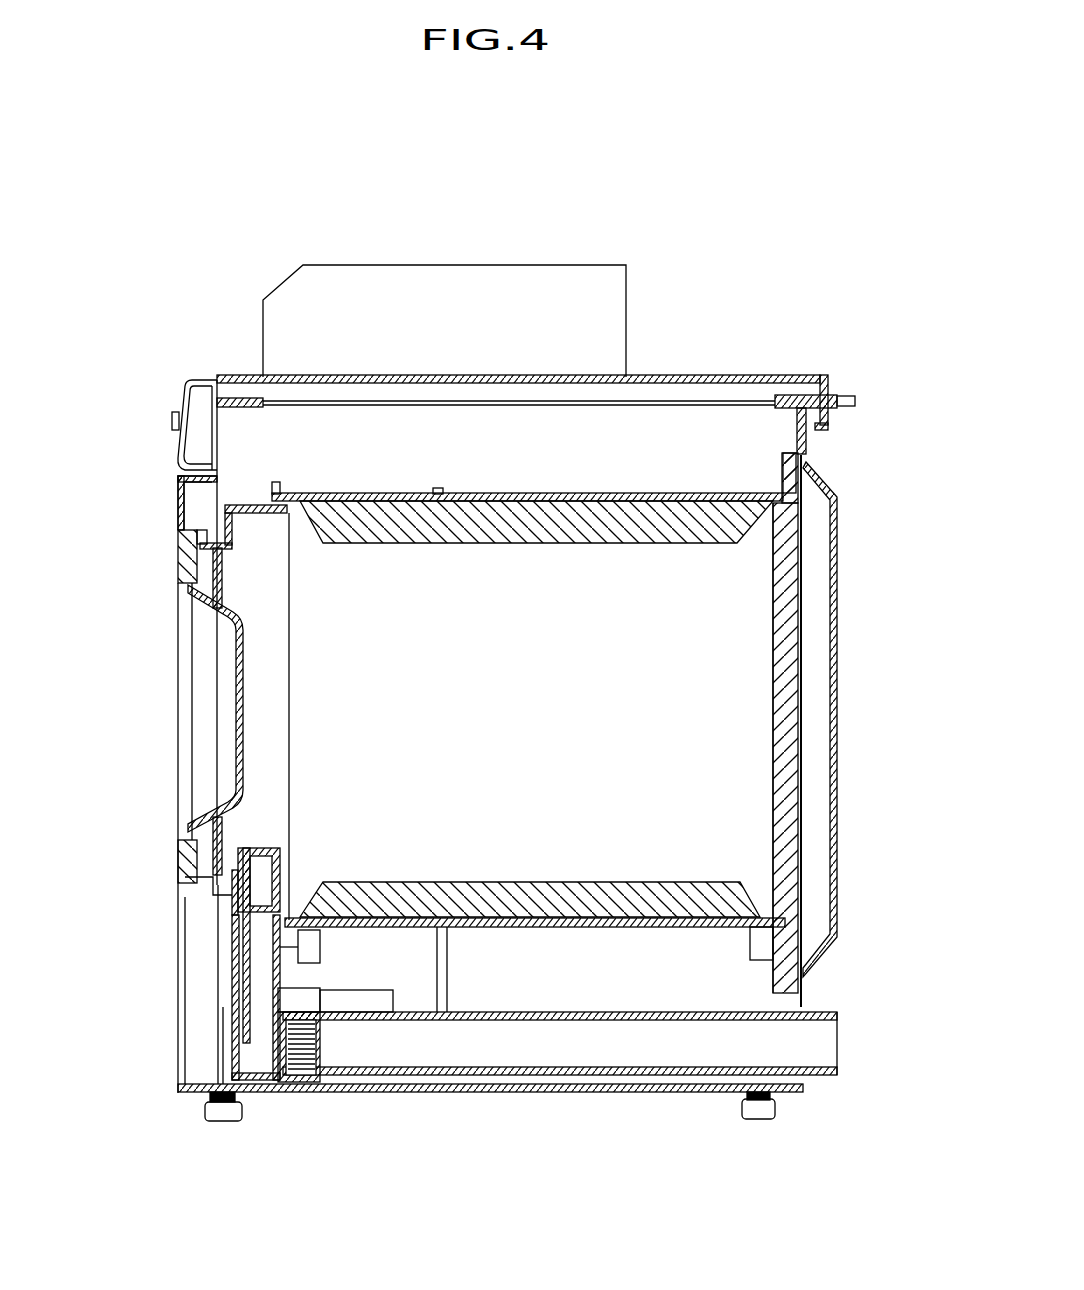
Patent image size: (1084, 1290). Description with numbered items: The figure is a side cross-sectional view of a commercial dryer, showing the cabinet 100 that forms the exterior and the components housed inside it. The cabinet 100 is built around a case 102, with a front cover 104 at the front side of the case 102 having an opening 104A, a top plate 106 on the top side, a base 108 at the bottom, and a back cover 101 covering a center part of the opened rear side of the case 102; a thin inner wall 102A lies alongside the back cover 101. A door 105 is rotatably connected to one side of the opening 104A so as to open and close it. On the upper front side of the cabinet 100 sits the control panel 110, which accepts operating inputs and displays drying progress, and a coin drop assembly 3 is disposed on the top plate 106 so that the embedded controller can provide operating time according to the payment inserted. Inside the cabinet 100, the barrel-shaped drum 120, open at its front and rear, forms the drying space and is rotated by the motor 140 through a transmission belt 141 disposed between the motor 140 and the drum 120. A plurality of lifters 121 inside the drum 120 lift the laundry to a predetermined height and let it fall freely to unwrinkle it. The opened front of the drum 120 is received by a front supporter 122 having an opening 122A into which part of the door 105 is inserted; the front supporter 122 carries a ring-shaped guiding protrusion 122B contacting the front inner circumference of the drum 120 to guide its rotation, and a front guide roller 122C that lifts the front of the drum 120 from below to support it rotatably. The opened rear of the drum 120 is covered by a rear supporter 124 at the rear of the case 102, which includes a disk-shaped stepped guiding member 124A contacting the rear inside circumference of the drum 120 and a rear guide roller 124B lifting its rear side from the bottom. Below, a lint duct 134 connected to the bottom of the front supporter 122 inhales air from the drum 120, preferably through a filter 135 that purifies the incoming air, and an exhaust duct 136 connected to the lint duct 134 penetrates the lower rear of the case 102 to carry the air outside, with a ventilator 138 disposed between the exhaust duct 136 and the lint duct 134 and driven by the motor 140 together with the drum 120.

The coin drop assembly 3 is at (373, 290).
The cabinet 100 is at (514, 822).
The back cover 101 is at (836, 612).
The case 102 is at (805, 460).
The inner panel 102A is at (803, 698).
The front cover 104 is at (178, 497).
The opening 104A is at (185, 540).
The door 105 is at (205, 665).
The top plate 106 is at (665, 372).
The base 108 is at (700, 1093).
The control panel 110 is at (188, 398).
The drum 120 is at (315, 770).
The lifters 121 is at (508, 892).
The front supporter 122 is at (222, 570).
The opening 122A is at (228, 602).
The guiding protrusion 122B is at (305, 500).
The front guide roller 122C is at (312, 940).
The rear supporter 124 is at (721, 723).
The guiding member 124A is at (776, 680).
The rear guide roller 124B is at (748, 950).
The lint duct 134 is at (235, 1020).
The filter 135 is at (248, 988).
The exhaust duct 136 is at (625, 1045).
The ventilator 138 is at (303, 1072).
The motor 140 is at (375, 997).
The transmission belt 141 is at (447, 1000).